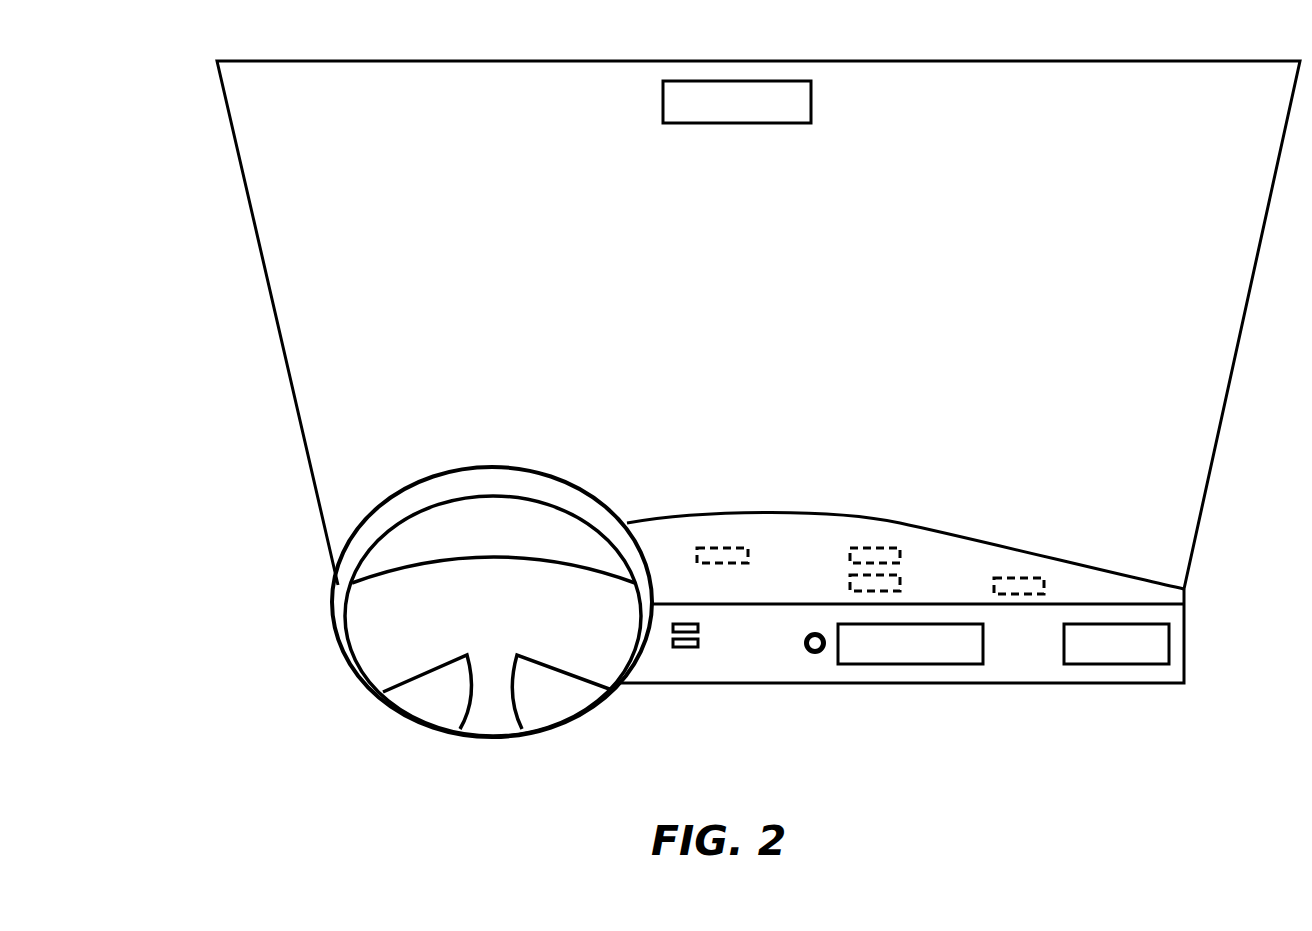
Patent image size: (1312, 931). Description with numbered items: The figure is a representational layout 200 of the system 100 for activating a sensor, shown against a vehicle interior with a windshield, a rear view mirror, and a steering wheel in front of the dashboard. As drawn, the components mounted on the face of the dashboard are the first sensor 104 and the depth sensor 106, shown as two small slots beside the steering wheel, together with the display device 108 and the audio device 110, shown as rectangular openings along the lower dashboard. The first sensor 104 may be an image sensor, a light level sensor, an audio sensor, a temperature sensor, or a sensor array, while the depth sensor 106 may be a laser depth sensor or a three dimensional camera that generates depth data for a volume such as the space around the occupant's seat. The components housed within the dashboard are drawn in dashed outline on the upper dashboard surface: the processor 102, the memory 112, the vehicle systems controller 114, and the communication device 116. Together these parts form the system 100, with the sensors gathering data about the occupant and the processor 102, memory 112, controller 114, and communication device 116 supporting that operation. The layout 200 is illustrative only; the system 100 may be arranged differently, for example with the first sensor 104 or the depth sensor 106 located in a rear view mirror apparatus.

The representational layout 200 is at (167, 62).
The system 100 is at (712, 398).
The processor 102 is at (746, 550).
The first sensor 104 is at (699, 628).
The depth sensor 106 is at (699, 644).
The display device 108 is at (897, 665).
The audio device 110 is at (1084, 665).
The memory 112 is at (899, 550).
The vehicle systems controller 114 is at (899, 577).
The communication device 116 is at (1021, 578).